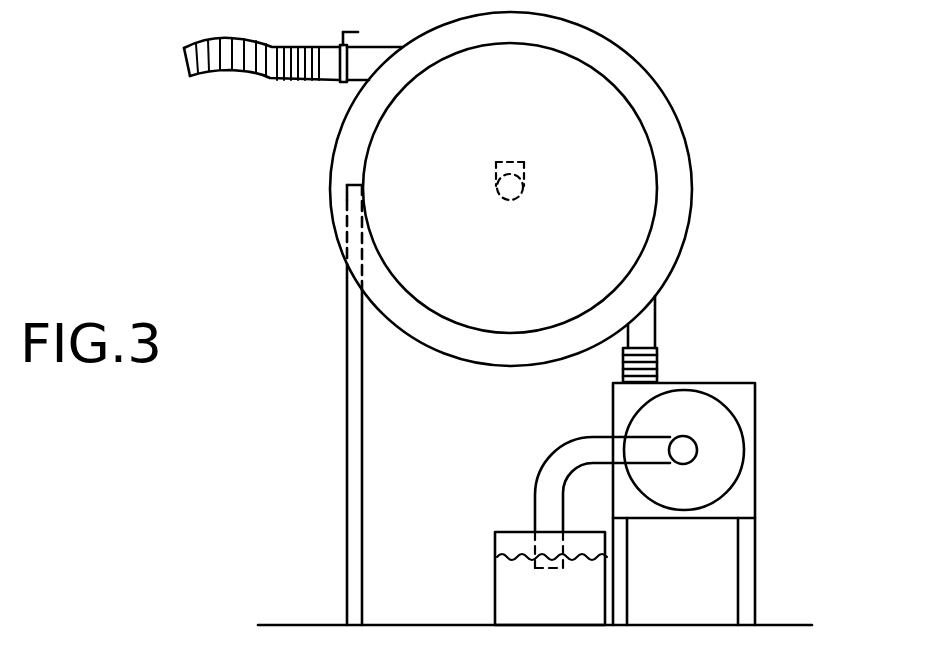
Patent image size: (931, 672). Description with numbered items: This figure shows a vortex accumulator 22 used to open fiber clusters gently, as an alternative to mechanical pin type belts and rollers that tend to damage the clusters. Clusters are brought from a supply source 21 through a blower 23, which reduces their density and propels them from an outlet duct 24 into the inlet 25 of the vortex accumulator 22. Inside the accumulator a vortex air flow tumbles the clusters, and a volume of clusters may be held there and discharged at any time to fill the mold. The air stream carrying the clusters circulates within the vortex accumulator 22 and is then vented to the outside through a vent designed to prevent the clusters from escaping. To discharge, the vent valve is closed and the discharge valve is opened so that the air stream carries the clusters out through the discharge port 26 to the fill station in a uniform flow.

The supply source 21 is at (551, 617).
The vortex accumulator 22 is at (720, 49).
The blower 23 is at (732, 444).
The outlet duct 24 is at (658, 378).
The inlet 25 is at (658, 301).
The discharge port 26 is at (223, 37).